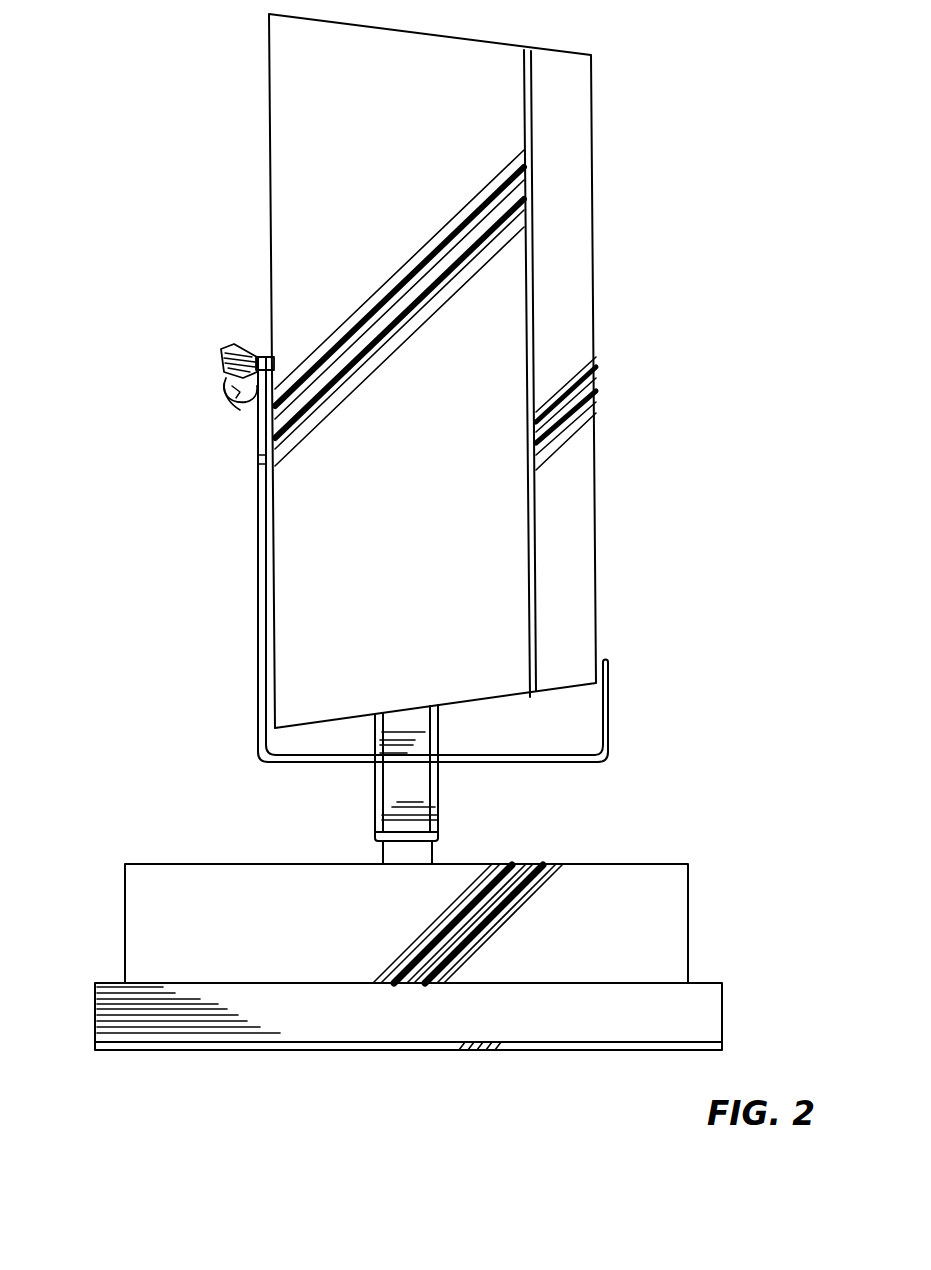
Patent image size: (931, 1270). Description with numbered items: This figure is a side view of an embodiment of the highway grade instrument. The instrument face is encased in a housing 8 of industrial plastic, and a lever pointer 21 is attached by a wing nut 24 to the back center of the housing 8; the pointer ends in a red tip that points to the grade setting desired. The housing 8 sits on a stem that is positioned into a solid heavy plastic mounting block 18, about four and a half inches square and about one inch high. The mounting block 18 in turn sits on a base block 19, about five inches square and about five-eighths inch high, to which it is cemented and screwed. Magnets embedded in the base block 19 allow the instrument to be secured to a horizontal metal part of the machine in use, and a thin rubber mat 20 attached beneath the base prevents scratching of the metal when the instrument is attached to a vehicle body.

The housing 8 is at (481, 42).
The wing nut 24 is at (231, 413).
The lever pointer 21 is at (611, 712).
The mounting block 18 is at (673, 922).
The base block 19 is at (708, 1011).
The rubber mat 20 is at (347, 1042).